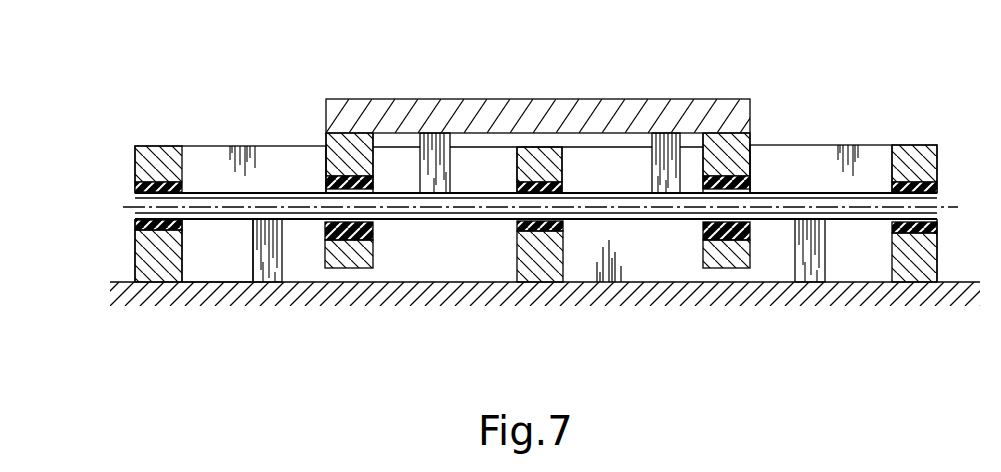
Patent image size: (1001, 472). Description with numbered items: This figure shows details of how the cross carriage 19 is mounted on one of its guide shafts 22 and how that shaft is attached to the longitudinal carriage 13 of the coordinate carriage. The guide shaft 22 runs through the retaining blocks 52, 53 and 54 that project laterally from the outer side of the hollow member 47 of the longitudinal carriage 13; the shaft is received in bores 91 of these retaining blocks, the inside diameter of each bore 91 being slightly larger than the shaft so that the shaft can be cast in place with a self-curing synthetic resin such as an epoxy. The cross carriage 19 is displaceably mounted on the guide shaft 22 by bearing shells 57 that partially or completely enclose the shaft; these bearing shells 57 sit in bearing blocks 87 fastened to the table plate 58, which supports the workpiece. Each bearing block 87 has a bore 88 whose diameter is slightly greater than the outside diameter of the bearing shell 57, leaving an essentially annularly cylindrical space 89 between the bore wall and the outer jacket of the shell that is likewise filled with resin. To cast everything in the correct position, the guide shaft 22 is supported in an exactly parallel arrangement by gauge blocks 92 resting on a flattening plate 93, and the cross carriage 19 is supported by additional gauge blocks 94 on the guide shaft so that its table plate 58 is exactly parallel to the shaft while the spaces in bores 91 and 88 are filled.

The longitudinal carriage 13 is at (305, 145).
The cross carriage 19 is at (504, 123).
The guide shaft 22 is at (213, 200).
The hollow member 47 is at (805, 158).
The retaining block 52 is at (132, 168).
The retaining block 53 is at (912, 162).
The retaining block 54 is at (543, 265).
The bearing shell 57 is at (702, 227).
The table plate 58 is at (477, 106).
The bearing block 87 is at (330, 150).
The bore 88 is at (343, 290).
The annularly cylindrical space 89 is at (375, 236).
The bore 91 is at (146, 184).
The gauge block 92 is at (217, 250).
The flattening plate 93 is at (635, 284).
The gauge block 94 is at (440, 171).